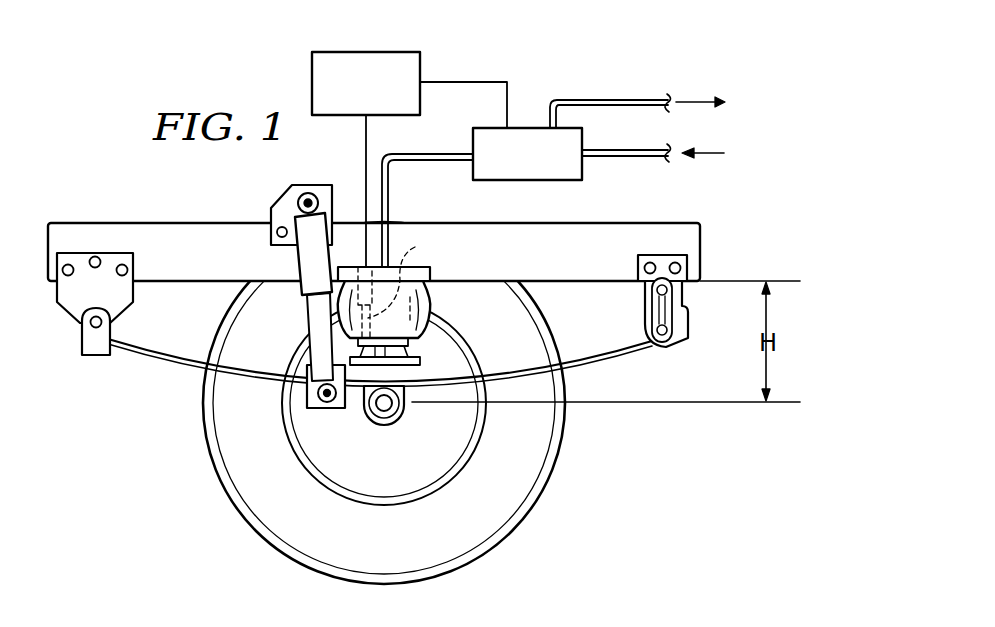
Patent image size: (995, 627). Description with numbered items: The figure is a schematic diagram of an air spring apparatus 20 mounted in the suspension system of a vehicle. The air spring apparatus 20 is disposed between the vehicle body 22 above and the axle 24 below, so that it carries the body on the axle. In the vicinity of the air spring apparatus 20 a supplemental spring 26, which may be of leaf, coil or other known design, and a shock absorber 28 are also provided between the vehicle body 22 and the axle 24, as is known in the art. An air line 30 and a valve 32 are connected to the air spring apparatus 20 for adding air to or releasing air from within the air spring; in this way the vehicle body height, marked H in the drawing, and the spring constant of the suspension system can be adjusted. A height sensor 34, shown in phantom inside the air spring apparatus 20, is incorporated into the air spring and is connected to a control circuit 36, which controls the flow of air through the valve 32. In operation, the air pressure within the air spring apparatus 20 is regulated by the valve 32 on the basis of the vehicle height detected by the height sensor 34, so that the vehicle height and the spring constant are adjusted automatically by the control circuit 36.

The air spring apparatus 20 is at (431, 310).
The vehicle body 22 is at (167, 223).
The axle 24 is at (385, 424).
The supplemental spring 26 is at (598, 360).
The shock absorber 28 is at (296, 264).
The air line 30 is at (422, 161).
The valve 32 is at (582, 178).
The height sensor 34 is at (415, 249).
The control circuit 36 is at (367, 52).